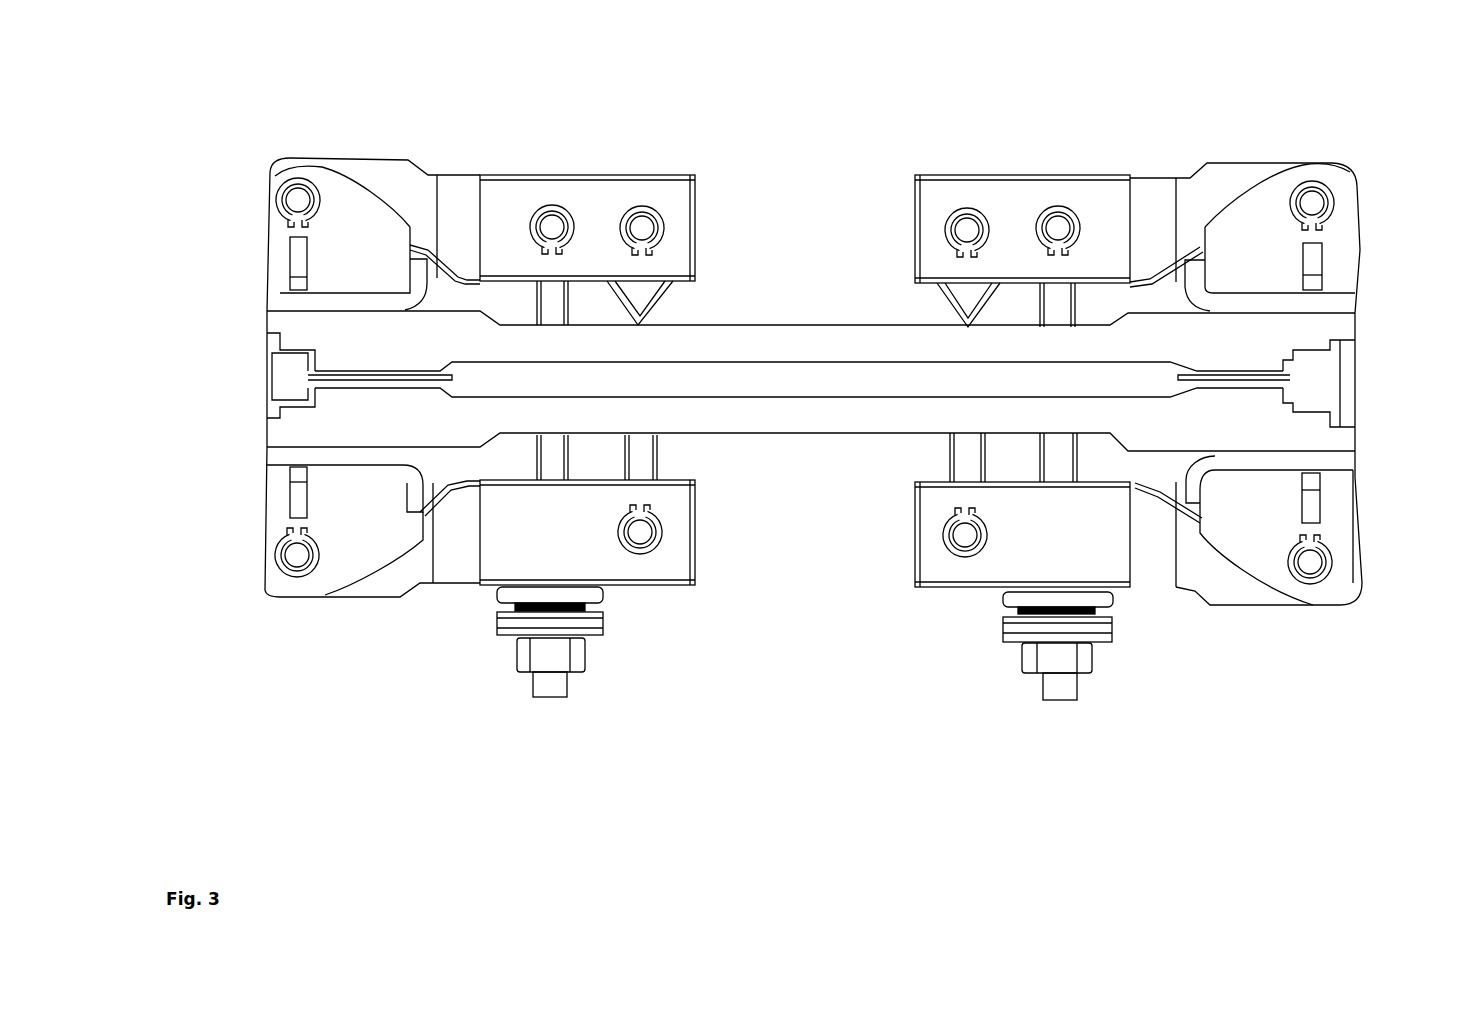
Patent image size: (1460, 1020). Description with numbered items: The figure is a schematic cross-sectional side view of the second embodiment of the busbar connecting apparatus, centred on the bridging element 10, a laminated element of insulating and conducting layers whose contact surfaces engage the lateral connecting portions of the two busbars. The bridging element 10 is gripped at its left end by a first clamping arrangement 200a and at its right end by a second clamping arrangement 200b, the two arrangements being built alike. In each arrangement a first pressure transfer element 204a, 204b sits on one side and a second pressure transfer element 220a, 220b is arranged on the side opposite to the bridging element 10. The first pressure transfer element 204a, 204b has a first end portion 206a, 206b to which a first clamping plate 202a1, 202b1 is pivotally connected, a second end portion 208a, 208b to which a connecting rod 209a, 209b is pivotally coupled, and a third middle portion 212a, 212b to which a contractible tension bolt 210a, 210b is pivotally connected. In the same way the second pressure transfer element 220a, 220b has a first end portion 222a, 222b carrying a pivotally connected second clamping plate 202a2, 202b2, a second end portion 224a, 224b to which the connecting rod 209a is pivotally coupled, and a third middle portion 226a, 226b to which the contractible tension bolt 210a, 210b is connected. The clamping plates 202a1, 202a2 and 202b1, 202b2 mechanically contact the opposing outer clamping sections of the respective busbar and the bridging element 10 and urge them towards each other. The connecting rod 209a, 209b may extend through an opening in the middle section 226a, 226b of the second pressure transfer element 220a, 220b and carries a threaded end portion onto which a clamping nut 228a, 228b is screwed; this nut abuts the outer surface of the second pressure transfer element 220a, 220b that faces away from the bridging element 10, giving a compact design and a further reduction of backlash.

The bridging element 10 is at (797, 340).
The first clamping arrangement 200a is at (236, 110).
The second clamping arrangement 200b is at (1167, 90).
The first clamping plate 202a1 is at (283, 257).
The second clamping plate 202a2 is at (278, 512).
The first clamping plate 202b1 is at (1350, 245).
The second clamping plate 202b2 is at (1347, 515).
The first pressure transfer element 204a is at (567, 187).
The first pressure transfer element 204b is at (1058, 193).
The first end portion 206a is at (281, 184).
The first end portion 206b is at (1291, 177).
The second end portion 208a is at (666, 166).
The second end portion 208b is at (948, 168).
The connecting rod 209a is at (668, 318).
The connecting rod 209b is at (962, 458).
The contractible tension bolt 210a is at (538, 458).
The contractible tension bolt 210b is at (1067, 456).
The third middle portion 212a is at (552, 165).
The third middle portion 212b is at (1060, 167).
The second pressure transfer element 220a is at (564, 611).
The second pressure transfer element 220b is at (1037, 598).
The first end portion 222a is at (301, 601).
The first end portion 222b is at (1293, 583).
The second end portion 224a is at (682, 605).
The second end portion 224b is at (950, 610).
The third middle portion 226a is at (572, 592).
The third middle portion 226b is at (1032, 613).
The clamping nut 228a is at (568, 690).
The clamping nut 228b is at (1032, 678).